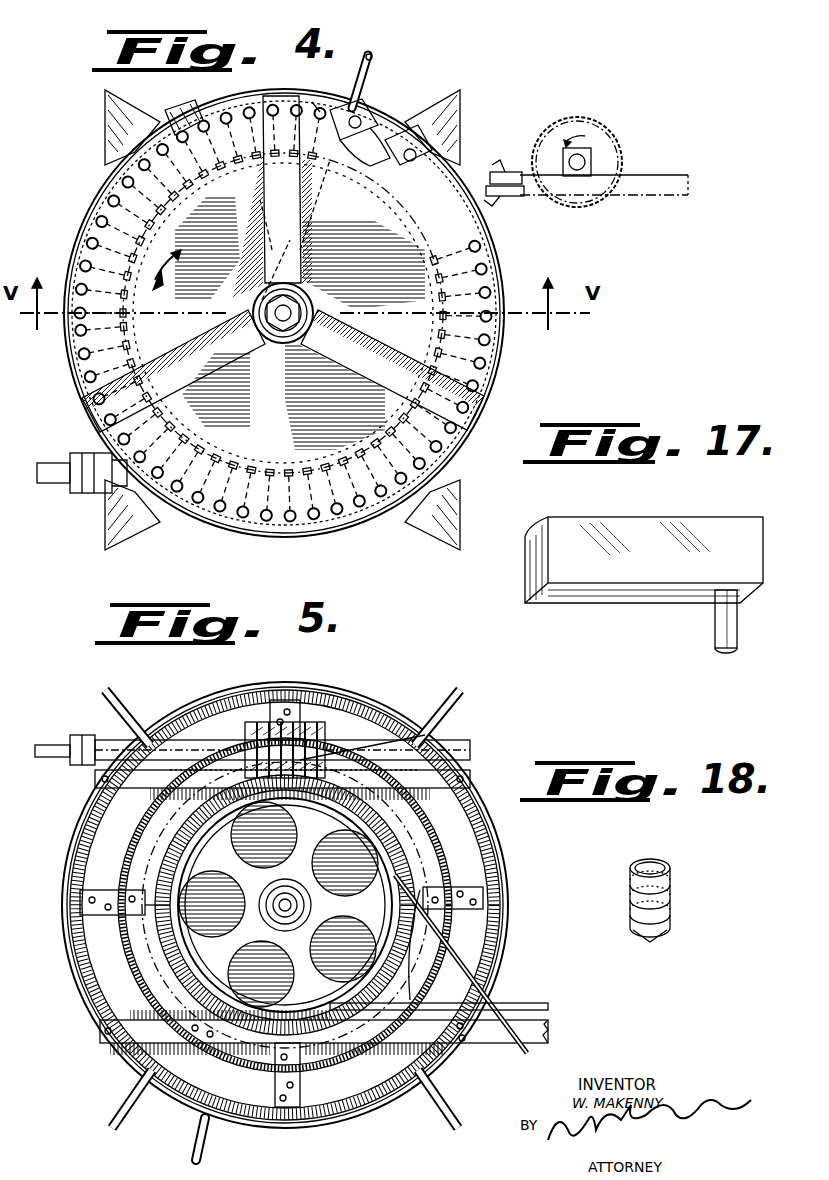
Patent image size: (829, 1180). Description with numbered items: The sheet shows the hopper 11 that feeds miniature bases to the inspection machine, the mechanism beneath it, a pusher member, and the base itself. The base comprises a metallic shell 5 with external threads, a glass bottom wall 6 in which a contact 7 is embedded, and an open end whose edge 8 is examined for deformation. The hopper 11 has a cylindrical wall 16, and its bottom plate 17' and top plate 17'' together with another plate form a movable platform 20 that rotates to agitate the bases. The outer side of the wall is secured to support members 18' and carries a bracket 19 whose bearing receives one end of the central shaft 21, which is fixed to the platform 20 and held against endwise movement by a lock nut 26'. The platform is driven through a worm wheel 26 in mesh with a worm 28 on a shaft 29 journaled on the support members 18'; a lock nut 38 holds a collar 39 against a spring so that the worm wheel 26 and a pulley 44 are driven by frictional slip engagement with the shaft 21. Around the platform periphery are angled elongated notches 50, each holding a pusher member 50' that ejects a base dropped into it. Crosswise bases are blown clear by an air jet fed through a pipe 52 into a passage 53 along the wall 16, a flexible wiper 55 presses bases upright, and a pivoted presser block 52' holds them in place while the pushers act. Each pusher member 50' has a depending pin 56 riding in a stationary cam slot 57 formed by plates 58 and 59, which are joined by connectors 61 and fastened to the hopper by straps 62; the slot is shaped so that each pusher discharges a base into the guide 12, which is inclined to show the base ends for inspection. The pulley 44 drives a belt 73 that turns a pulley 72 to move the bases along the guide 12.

In FIG. 4, the hopper 11 is at (66, 388).
In FIG. 5, the hopper 11 is at (377, 693).
In FIG. 4, the guide 12 is at (651, 196).
In FIG. 5, the guide 12 is at (556, 1031).
In FIG. 5, the cylindrical wall 16 is at (65, 970).
In FIG. 5, the bottom plate 17' is at (91, 892).
In FIG. 4, the top plate 17'' is at (210, 511).
In FIG. 4, the support members 18' is at (278, 338).
In FIG. 5, the support members 18' is at (304, 910).
In FIG. 4, the bracket 19 is at (255, 330).
In FIG. 4, the movable platform 20 is at (362, 485).
In FIG. 4, the central shaft 21 is at (284, 322).
In FIG. 5, the central shaft 21 is at (275, 912).
In FIG. 5, the worm wheel 26 is at (409, 753).
In FIG. 4, the lock nut 26' is at (327, 302).
In FIG. 5, the worm 28 is at (305, 740).
In FIG. 4, the shaft 29 is at (58, 480).
In FIG. 5, the shaft 29 is at (50, 742).
In FIG. 5, the lock nut 38 is at (280, 900).
In FIG. 5, the collar 39 is at (295, 905).
In FIG. 5, the pulley 44 is at (360, 960).
In FIG. 4, the elongated notches 50 is at (317, 340).
In FIG. 4, the pusher member 50' is at (397, 350).
In FIG. 17, the pusher member 50' is at (644, 542).
In FIG. 4, the pipe 52 is at (382, 81).
In FIG. 5, the pipe 52 is at (224, 1139).
In FIG. 4, the presser block 52' is at (391, 108).
In FIG. 4, the passage 53 is at (256, 286).
In FIG. 4, the flexible wiper 55 is at (180, 130).
In FIG. 5, the depending pins 56 is at (347, 1058).
In FIG. 17, the depending pins 56 is at (722, 630).
In FIG. 5, the cam slot 57 is at (431, 818).
In FIG. 5, the plate 58 is at (140, 852).
In FIG. 5, the plate 59 is at (470, 876).
In FIG. 5, the connectors 61 is at (285, 705).
In FIG. 5, the straps 62 is at (385, 778).
In FIG. 4, the pulley 72 is at (625, 150).
In FIG. 4, the belt 73 is at (510, 175).
In FIG. 5, the belt 73 is at (530, 1005).
In FIG. 18, the metallic shell 5 is at (672, 898).
In FIG. 18, the glass bottom wall 6 is at (660, 932).
In FIG. 18, the contact 7 is at (648, 942).
In FIG. 18, the edge 8 is at (632, 866).